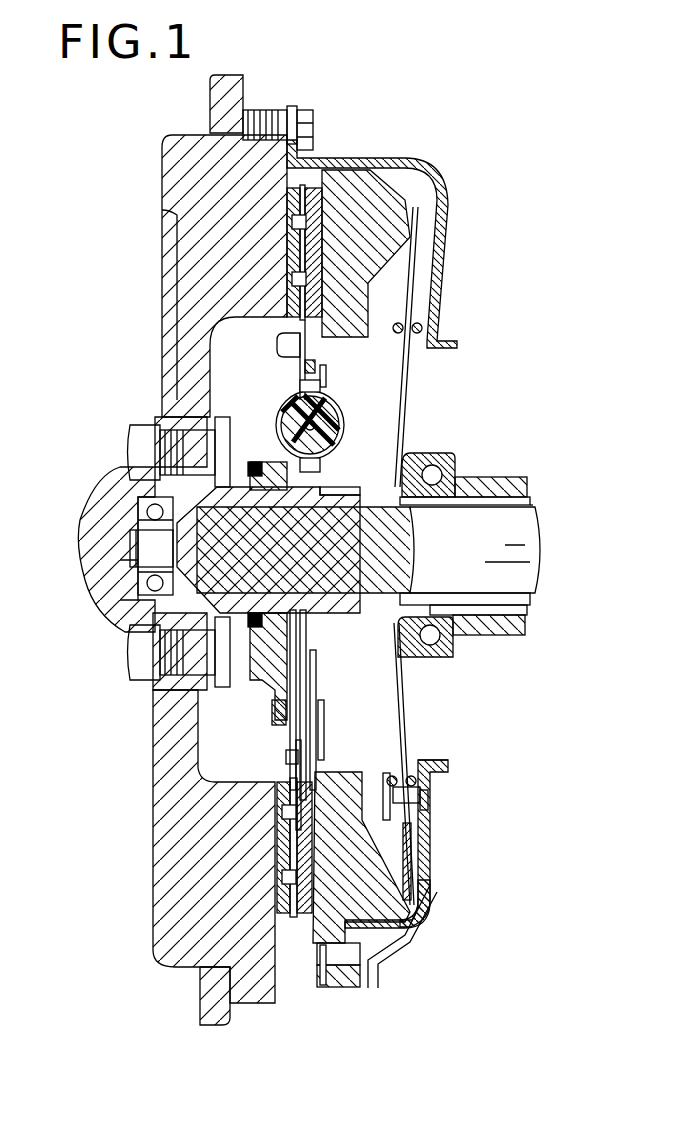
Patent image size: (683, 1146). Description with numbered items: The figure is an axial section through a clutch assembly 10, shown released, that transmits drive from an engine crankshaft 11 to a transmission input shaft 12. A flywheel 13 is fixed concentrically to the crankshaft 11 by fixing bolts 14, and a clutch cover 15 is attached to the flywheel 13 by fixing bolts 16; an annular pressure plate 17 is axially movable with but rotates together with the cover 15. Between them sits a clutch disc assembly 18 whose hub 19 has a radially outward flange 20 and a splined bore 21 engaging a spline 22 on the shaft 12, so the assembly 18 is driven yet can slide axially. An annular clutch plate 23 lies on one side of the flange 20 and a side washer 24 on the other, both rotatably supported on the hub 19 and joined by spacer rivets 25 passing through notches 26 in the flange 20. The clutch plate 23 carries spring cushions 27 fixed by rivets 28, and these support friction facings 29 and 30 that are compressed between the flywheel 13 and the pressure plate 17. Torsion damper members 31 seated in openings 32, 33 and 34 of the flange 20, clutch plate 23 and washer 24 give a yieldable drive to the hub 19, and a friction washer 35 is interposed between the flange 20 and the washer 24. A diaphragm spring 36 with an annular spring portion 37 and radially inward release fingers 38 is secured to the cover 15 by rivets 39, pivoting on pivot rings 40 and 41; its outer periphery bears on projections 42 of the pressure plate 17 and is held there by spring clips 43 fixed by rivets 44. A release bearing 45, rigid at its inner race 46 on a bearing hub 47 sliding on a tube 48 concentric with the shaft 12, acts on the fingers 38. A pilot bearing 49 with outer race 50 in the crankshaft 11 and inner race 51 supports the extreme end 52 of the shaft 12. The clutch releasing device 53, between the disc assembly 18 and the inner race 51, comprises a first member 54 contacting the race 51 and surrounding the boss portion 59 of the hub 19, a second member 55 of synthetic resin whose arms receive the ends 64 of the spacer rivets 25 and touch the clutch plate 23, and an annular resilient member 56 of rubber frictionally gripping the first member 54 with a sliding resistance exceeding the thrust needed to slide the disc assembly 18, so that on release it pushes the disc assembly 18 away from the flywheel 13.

The clutch assembly 10 is at (399, 227).
The engine crankshaft 11 is at (110, 610).
The transmission input shaft 12 is at (530, 538).
The flywheel 13 is at (175, 308).
The fixing bolts 14 is at (150, 425).
The clutch cover 15 is at (380, 158).
The fixing bolts 16 is at (313, 125).
The pressure plate 17 is at (372, 232).
The clutch disc assembly 18 is at (404, 380).
The hub 19 is at (335, 497).
The flange 20 is at (306, 665).
The splined bore 21 is at (335, 500).
The spline 22 is at (395, 588).
The clutch plate 23 is at (290, 360).
The side washer 24 is at (380, 365).
The spacer rivets 25 is at (324, 718).
The notches 26 is at (316, 690).
The spring cushions 27 is at (302, 765).
The rivets 28 is at (286, 756).
The friction facing 29 is at (280, 845).
The friction facing 30 is at (312, 850).
The torsion damper members 31 is at (344, 425).
The opening 32 is at (315, 366).
The opening 33 is at (300, 390).
The opening 34 is at (326, 385).
The friction washer 35 is at (296, 640).
The diaphragm spring 36 is at (411, 838).
The annular spring portion 37 is at (430, 868).
The release fingers 38 is at (402, 688).
The rivets 39 is at (428, 798).
The pivot ring 40 is at (418, 773).
The pivot ring 41 is at (420, 782).
The projections 42 is at (405, 938).
The spring clips 43 is at (425, 910).
The rivets 44 is at (340, 972).
The release bearing 45 is at (440, 455).
The inner race 46 is at (462, 480).
The bearing hub 47 is at (505, 497).
The tube 48 is at (530, 505).
The pilot bearing 49 is at (130, 520).
The outer race 50 is at (145, 585).
The inner race 51 is at (145, 578).
The extreme end 52 is at (140, 545).
The clutch releasing device 53 is at (252, 460).
The first member 54 is at (130, 610).
The second member 55 is at (270, 660).
The annular resilient member 56 is at (256, 612).
The boss portion 59 is at (268, 490).
The ends 64 is at (276, 710).